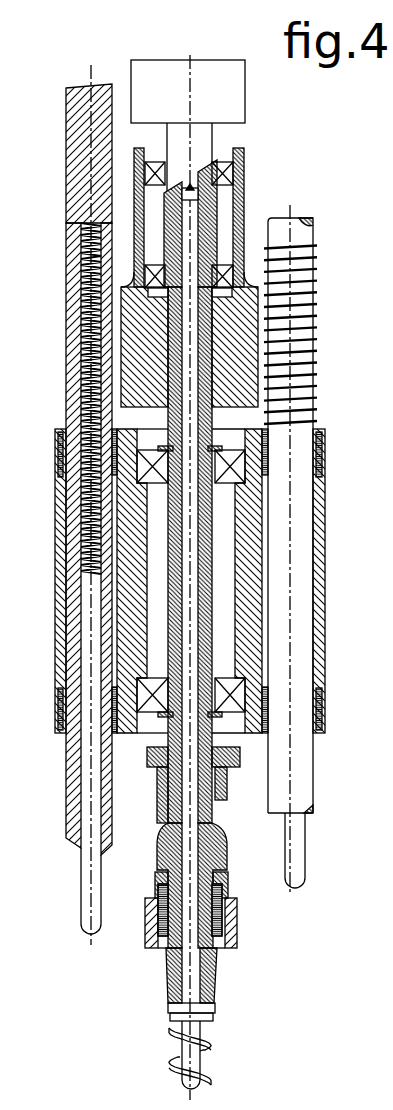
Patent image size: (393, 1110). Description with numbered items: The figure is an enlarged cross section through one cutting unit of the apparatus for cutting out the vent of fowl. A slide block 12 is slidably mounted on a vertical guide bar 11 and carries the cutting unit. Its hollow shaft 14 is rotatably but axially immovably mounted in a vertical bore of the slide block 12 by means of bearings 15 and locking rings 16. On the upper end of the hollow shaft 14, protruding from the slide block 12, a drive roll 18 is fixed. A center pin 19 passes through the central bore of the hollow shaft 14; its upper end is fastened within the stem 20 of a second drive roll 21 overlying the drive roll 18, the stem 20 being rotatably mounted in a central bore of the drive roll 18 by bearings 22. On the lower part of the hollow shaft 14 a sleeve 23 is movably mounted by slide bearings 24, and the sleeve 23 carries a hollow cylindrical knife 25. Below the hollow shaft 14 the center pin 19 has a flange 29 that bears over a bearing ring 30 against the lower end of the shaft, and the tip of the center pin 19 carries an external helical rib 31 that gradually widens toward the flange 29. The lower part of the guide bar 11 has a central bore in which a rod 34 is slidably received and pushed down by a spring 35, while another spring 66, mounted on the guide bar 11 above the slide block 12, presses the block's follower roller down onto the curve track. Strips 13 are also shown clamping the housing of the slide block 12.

The guide bar 11 is at (305, 238).
The slide block 12 is at (325, 545).
The clamping strips 13 is at (325, 443).
The hollow shaft 14 is at (207, 584).
The bearings 15 is at (240, 468).
The locking rings 16 is at (222, 447).
The drive roll 18 is at (243, 338).
The center pin 19 is at (201, 1035).
The stem 20 is at (200, 138).
The second drive roll 21 is at (233, 100).
The bearings 22 is at (224, 268).
The sleeve 23 is at (218, 831).
The slide bearings 24 is at (216, 780).
The hollow cylindrical knife 25 is at (235, 912).
The flange 29 is at (213, 1014).
The bearing ring 30 is at (180, 1010).
The external helical rib 31 is at (172, 1038).
The rod 34 is at (300, 842).
The spring 35 is at (80, 282).
The springs 66 is at (317, 288).